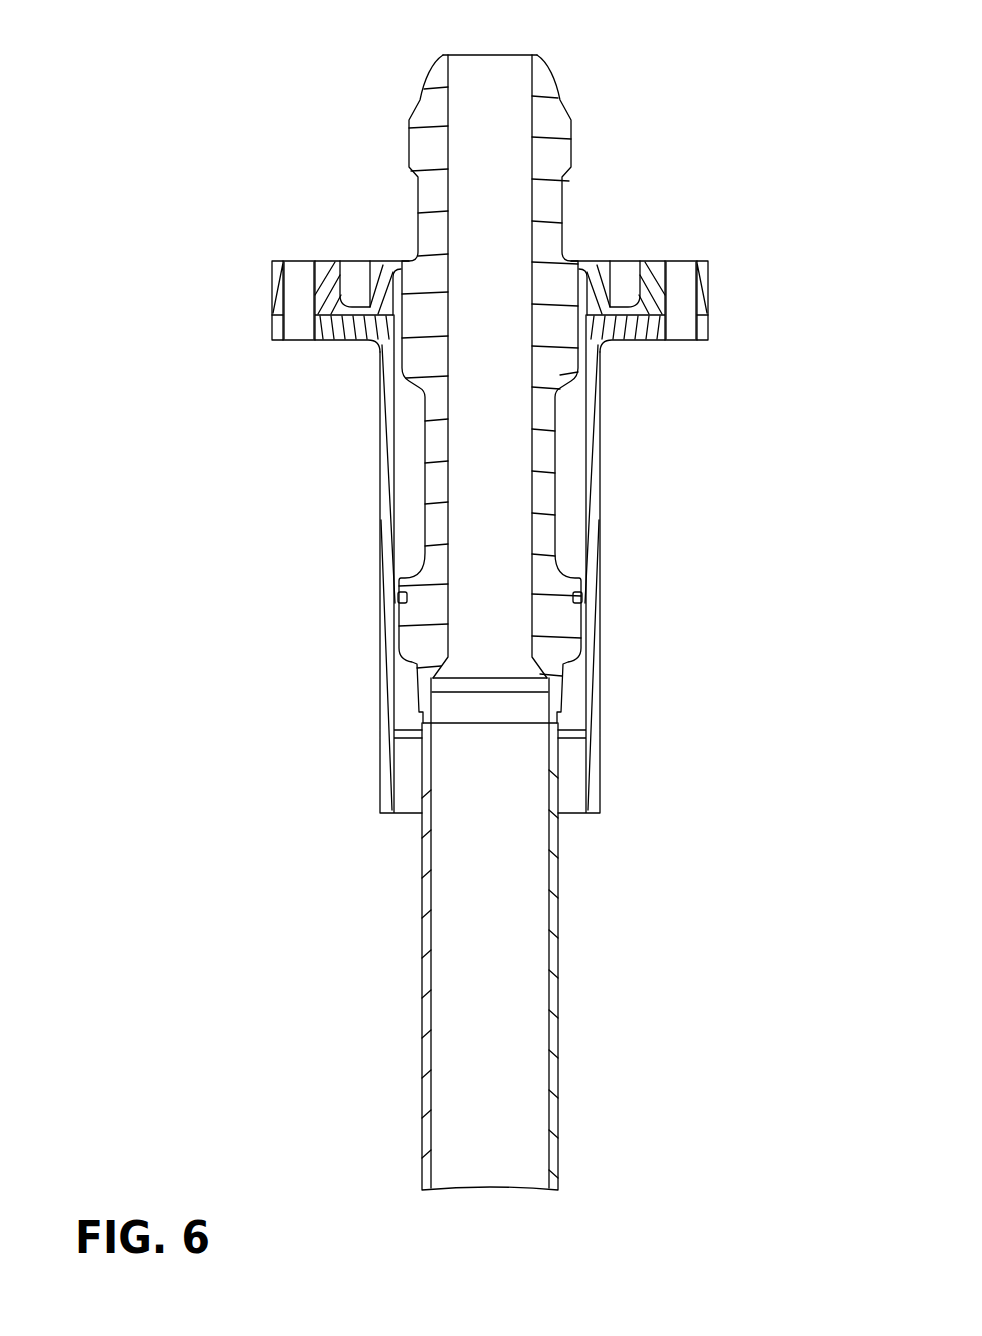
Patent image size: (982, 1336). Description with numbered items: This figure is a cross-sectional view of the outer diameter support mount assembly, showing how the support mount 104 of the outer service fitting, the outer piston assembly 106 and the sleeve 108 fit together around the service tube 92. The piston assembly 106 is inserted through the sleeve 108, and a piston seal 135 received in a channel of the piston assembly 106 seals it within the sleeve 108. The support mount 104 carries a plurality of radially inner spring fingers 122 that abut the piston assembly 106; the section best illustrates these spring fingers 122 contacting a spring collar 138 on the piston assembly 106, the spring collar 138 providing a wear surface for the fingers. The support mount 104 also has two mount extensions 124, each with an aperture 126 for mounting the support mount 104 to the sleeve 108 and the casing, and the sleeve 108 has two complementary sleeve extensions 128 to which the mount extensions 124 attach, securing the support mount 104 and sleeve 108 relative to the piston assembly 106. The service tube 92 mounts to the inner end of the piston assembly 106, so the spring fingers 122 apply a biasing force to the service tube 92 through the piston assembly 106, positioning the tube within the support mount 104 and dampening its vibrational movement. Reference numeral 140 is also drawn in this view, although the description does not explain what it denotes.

The service tube 92 is at (558, 940).
The support mount 104 is at (318, 262).
The outer piston assembly 106 is at (551, 58).
The sleeve 108 is at (382, 473).
The spring fingers 122 is at (392, 262).
The mount extensions 124 is at (277, 283).
The aperture 126 is at (301, 280).
The sleeve extensions 128 is at (277, 327).
The piston seal 135 is at (397, 597).
The spring collar 138 is at (566, 384).
The gap 140 is at (395, 623).